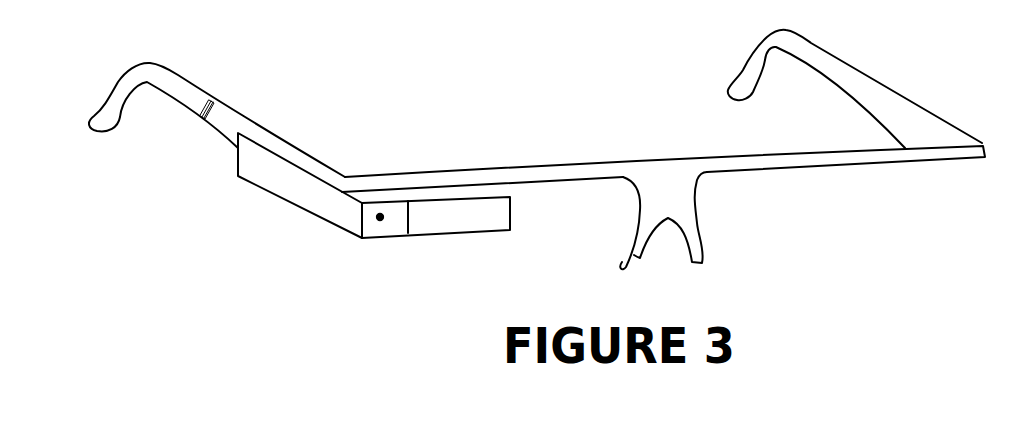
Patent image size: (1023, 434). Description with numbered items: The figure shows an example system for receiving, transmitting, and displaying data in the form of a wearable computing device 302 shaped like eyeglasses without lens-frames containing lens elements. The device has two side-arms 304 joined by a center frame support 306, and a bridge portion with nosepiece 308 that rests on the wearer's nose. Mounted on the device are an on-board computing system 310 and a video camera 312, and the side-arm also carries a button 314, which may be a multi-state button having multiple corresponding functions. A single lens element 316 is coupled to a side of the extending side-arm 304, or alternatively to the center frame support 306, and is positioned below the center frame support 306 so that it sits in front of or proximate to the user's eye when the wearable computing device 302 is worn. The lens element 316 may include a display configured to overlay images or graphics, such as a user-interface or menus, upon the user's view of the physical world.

The wearable computing device 302 is at (452, 98).
The side-arms 304 is at (174, 73).
The center frame support 306 is at (560, 166).
The bridge portion with nosepiece 308 is at (695, 214).
The on-board computing system 310 is at (278, 197).
The video camera 312 is at (377, 221).
The button 314 is at (201, 109).
The single lens element 316 is at (463, 233).